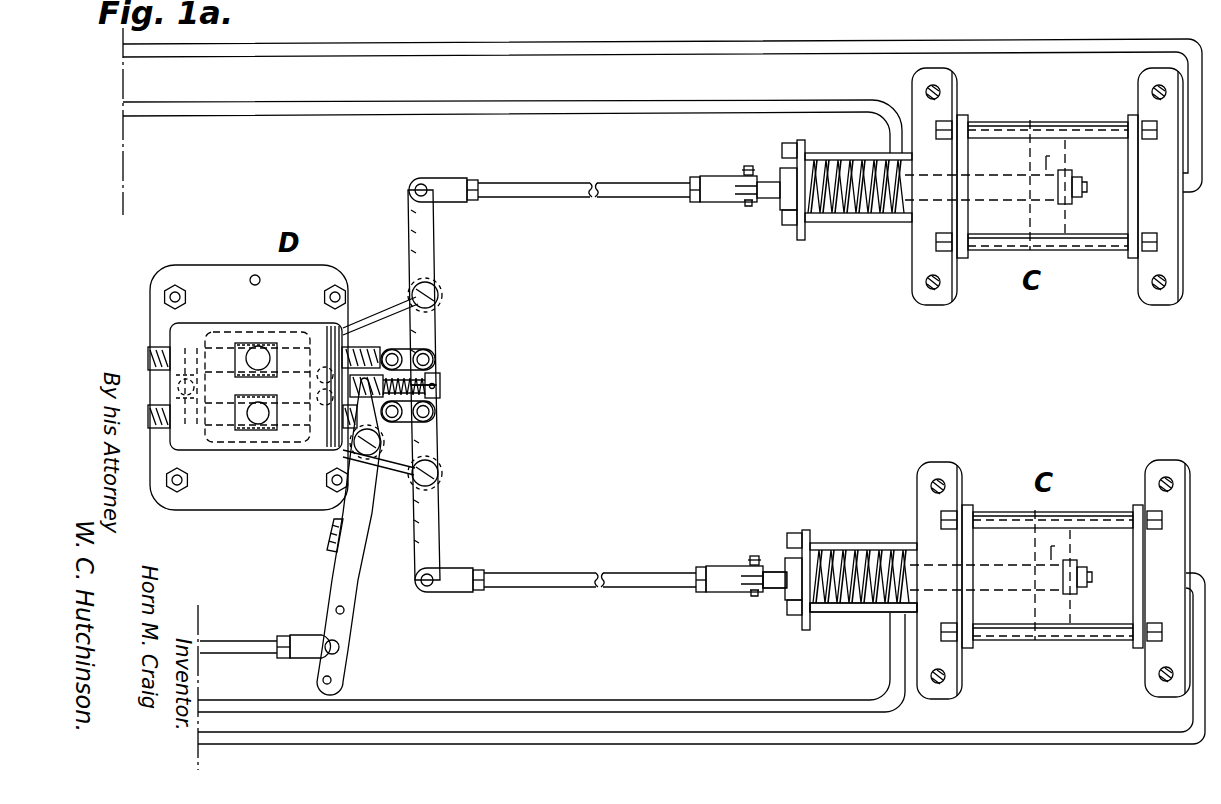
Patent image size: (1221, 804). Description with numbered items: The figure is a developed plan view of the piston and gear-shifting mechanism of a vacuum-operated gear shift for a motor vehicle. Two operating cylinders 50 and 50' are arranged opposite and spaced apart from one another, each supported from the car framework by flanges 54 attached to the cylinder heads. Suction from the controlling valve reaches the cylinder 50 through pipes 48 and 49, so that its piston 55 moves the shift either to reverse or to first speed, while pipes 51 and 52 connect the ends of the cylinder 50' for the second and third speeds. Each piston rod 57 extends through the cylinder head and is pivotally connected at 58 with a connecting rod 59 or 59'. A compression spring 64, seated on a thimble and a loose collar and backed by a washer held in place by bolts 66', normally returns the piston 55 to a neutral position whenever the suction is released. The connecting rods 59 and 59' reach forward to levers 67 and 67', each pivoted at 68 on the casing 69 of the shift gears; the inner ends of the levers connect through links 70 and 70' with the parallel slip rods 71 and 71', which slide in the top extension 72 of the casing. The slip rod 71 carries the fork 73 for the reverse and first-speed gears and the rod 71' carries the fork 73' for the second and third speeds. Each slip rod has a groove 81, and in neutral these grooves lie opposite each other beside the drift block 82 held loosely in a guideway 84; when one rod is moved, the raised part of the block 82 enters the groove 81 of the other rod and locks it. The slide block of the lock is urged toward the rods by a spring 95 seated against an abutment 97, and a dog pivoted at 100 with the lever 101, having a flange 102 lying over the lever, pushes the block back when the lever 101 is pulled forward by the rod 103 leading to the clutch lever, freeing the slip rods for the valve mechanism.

The pipe 48 is at (828, 106).
The pipe 49 is at (1038, 44).
The cylinder 50 is at (1031, 199).
The cylinder 50' is at (1036, 564).
The pipe 51 is at (992, 200).
The pipe 52 is at (1010, 735).
The flange 54 is at (942, 303).
The piston 55 is at (1066, 161).
The piston rod 57 is at (774, 567).
The pivotal connection 58 is at (746, 206).
The connecting rod 59 is at (594, 179).
The connecting rod 59' is at (600, 564).
The compression spring 64 is at (848, 218).
The bolts 66' is at (863, 625).
The lever 67 is at (446, 287).
The lever 67' is at (448, 482).
The pivot 68 is at (437, 292).
The casing 69 is at (352, 282).
The link 70 is at (435, 341).
The link 70' is at (446, 417).
The slip rod 71 is at (249, 323).
The slip rod 71' is at (243, 451).
The top extension 72 is at (260, 326).
The fork 73 is at (272, 334).
The fork 73' is at (267, 437).
The grooves 81 is at (189, 346).
The drift block 82 is at (182, 387).
The guideway 84 is at (208, 340).
The spring 95 is at (408, 377).
The abutment 97 is at (441, 383).
The pivot 100 is at (370, 456).
The lever 101 is at (359, 561).
The flange 102 is at (330, 538).
The rod 103 is at (247, 643).